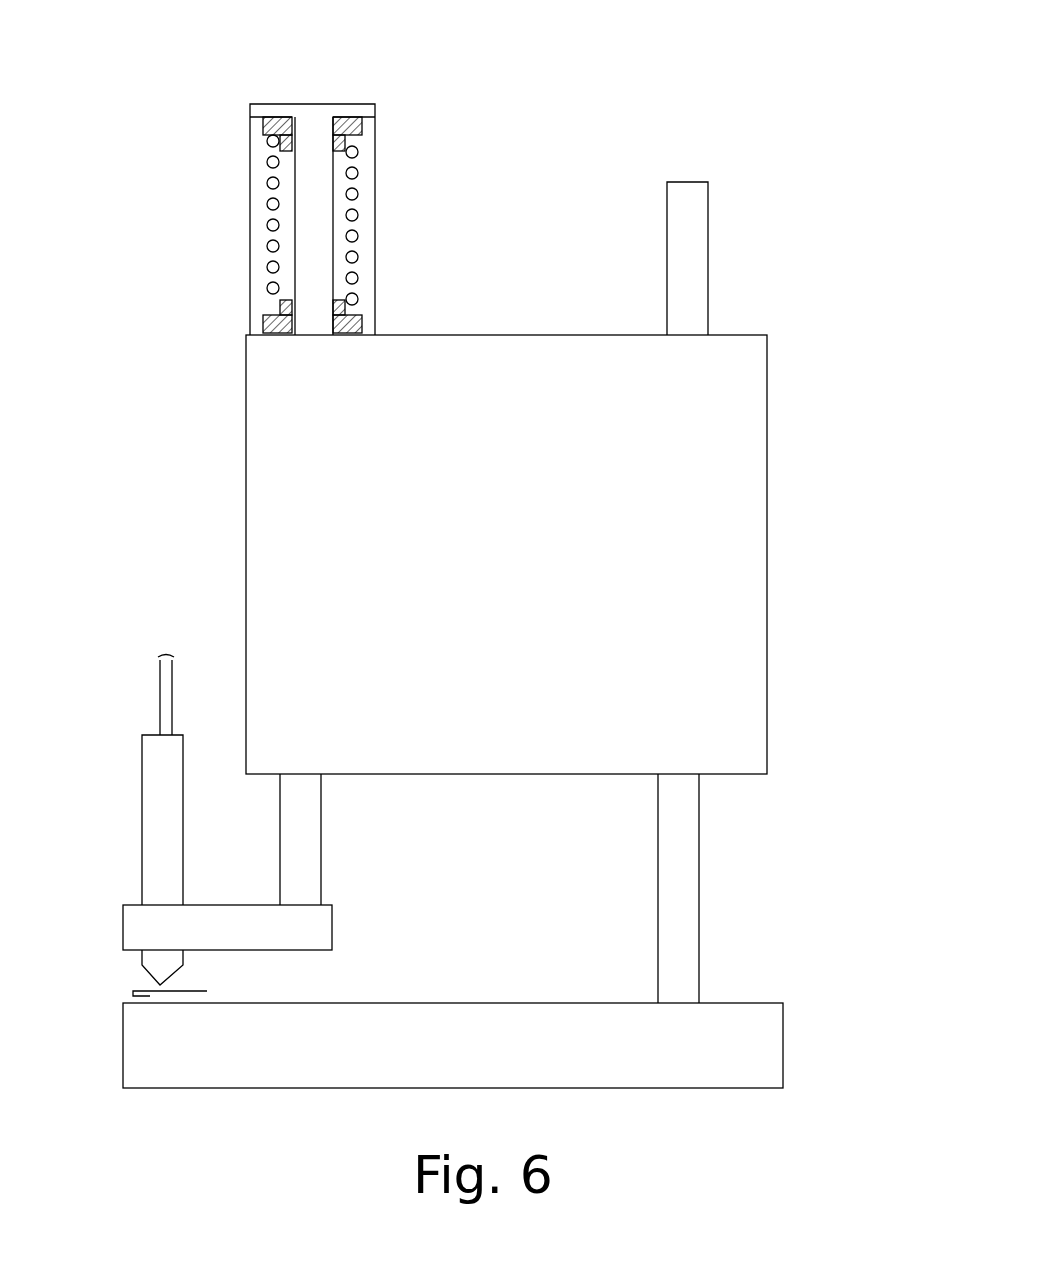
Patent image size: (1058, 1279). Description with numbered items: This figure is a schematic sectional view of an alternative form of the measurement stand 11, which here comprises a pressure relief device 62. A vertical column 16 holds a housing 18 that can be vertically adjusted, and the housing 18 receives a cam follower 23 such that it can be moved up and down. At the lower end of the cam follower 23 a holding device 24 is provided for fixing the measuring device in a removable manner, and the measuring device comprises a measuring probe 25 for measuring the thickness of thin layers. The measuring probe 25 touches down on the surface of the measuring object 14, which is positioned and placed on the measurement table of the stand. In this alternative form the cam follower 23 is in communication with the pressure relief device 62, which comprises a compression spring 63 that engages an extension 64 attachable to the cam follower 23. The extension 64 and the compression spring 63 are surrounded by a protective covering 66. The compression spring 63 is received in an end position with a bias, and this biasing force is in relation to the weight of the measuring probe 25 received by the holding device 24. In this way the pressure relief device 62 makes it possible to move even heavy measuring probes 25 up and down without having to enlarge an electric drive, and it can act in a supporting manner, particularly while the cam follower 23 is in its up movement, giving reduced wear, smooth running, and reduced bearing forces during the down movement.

The measurement stand 11 is at (780, 670).
The measuring object 14 is at (136, 993).
The vertical column 16 is at (690, 252).
The housing 18 is at (767, 553).
The cam follower 23 is at (305, 845).
The holding device 24 is at (315, 928).
The measuring probe 25 is at (163, 833).
The pressure relief device 62 is at (397, 265).
The compression spring 63 is at (355, 172).
The extension 64 is at (320, 230).
The protective covering 66 is at (353, 104).